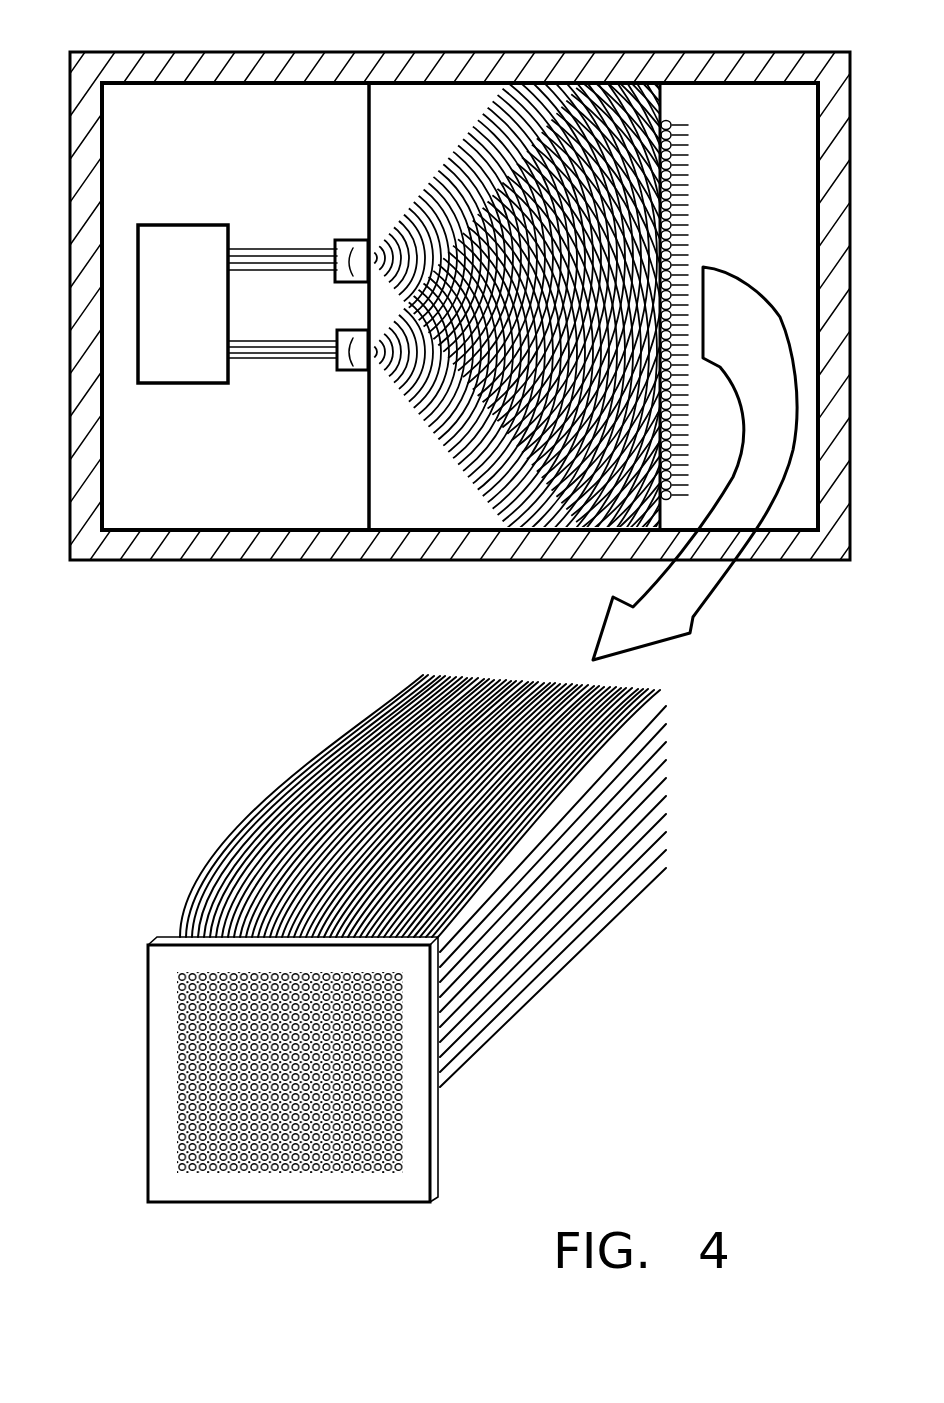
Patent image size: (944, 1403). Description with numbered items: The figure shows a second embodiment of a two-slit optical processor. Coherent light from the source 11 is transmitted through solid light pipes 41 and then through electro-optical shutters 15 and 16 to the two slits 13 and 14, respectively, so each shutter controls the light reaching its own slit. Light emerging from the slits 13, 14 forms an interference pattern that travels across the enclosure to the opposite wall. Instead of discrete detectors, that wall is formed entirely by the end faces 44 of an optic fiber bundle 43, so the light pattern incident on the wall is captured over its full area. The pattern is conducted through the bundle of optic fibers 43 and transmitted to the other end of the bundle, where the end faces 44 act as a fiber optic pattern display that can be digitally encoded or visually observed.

The source 11 is at (178, 233).
The light pipes 41 is at (280, 250).
The slit 13 is at (367, 262).
The slit 14 is at (365, 355).
The electro-optical shutter 15 is at (347, 272).
The electro-optical shutter 16 is at (350, 340).
The optic fiber bundle 43 is at (545, 937).
The end faces 44 is at (297, 1173).